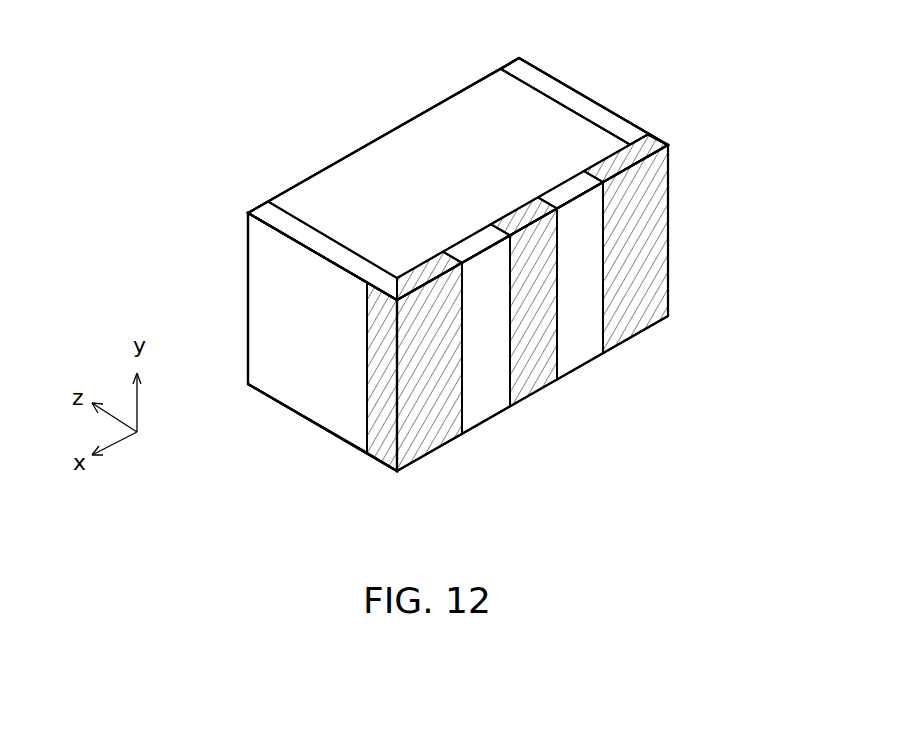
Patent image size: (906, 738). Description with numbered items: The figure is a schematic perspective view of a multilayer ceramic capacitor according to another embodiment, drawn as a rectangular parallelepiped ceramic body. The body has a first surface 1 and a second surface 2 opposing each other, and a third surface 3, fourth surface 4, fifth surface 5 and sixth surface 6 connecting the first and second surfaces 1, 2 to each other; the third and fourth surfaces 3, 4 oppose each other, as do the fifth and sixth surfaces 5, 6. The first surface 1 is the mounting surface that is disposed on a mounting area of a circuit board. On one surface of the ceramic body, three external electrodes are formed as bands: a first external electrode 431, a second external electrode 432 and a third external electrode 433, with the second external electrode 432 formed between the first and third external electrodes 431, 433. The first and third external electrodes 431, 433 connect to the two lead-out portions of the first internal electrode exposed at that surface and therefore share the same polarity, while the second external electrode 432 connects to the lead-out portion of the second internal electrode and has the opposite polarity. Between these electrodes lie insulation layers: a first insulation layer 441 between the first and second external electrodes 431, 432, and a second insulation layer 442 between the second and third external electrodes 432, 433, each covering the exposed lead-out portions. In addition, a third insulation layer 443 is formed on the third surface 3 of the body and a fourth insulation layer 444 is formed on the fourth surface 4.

The first surface 1 is at (638, 353).
The second surface 2 is at (305, 140).
The third surface 3 is at (275, 317).
The fourth surface 4 is at (540, 118).
The fifth surface 5 is at (433, 140).
The sixth surface 6 is at (333, 383).
The first external electrode 431 is at (433, 455).
The second external electrode 432 is at (540, 385).
The third external electrode 433 is at (642, 218).
The first insulation layer 441 is at (483, 410).
The second insulation layer 442 is at (582, 353).
The third insulation layer 443 is at (275, 263).
The fourth insulation layer 444 is at (603, 108).